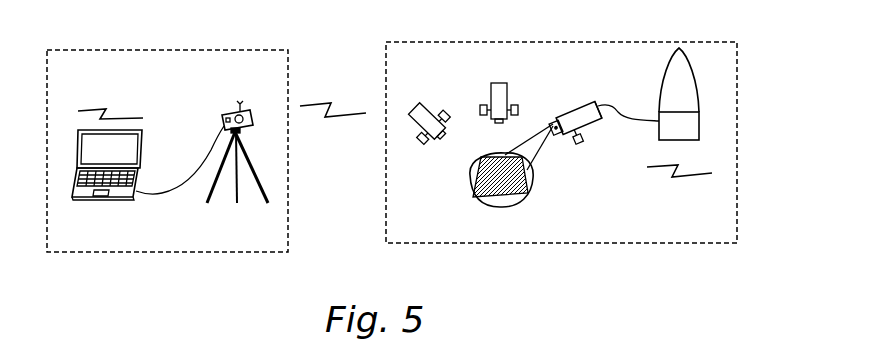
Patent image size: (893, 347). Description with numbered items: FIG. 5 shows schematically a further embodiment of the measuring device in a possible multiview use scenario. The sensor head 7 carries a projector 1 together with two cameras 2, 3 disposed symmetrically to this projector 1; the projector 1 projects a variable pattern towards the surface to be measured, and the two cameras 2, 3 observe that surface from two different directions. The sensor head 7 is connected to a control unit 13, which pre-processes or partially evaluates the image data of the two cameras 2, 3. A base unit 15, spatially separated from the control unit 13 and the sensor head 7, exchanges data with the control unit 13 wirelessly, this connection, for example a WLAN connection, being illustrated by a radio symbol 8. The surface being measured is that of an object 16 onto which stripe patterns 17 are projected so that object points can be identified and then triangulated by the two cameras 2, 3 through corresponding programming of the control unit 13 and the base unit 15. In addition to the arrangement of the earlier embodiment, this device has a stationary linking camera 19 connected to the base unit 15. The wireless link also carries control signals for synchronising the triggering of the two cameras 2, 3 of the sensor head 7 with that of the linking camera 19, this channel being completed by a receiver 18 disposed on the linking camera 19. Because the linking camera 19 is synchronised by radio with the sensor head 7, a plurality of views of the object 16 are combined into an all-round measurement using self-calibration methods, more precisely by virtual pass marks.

The projector 1 is at (564, 136).
The camera 2 is at (553, 108).
The camera 3 is at (580, 146).
The sensor head 7 is at (585, 122).
The radio symbol 8 is at (395, 131).
The control unit 13 is at (667, 134).
The base unit 15 is at (82, 198).
The object 16 is at (476, 163).
The stripe patterns 17 is at (520, 188).
The receiver 18 is at (242, 110).
The linking camera 19 is at (245, 188).